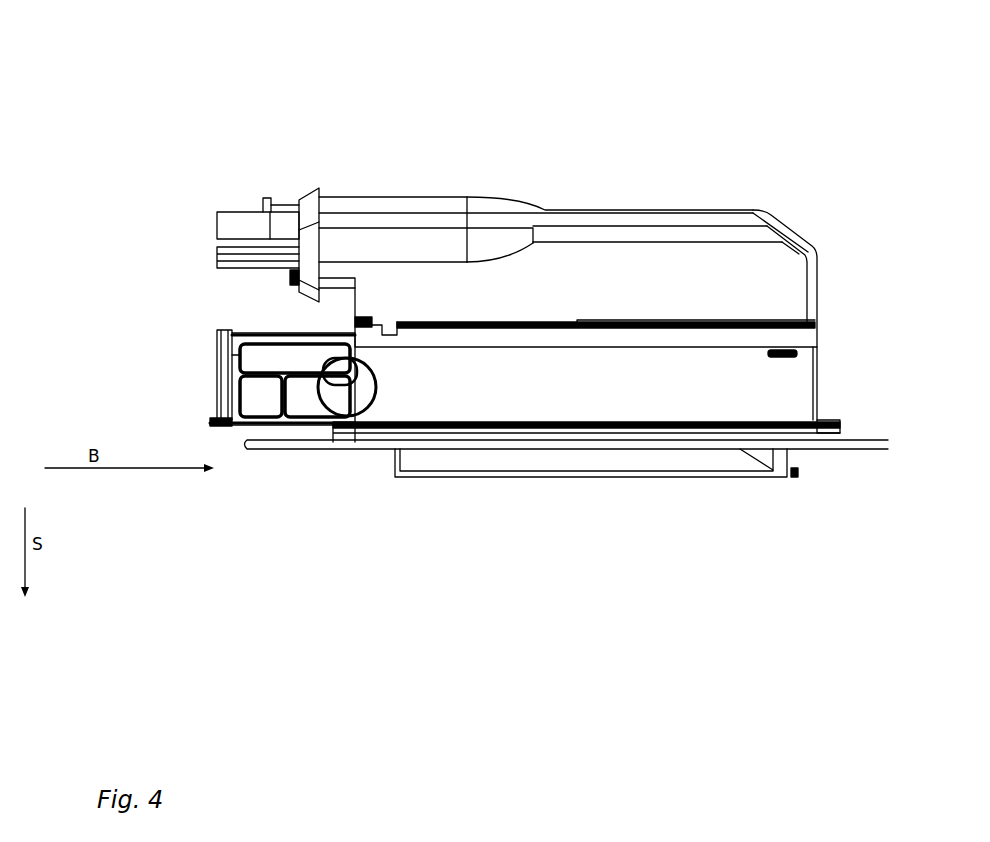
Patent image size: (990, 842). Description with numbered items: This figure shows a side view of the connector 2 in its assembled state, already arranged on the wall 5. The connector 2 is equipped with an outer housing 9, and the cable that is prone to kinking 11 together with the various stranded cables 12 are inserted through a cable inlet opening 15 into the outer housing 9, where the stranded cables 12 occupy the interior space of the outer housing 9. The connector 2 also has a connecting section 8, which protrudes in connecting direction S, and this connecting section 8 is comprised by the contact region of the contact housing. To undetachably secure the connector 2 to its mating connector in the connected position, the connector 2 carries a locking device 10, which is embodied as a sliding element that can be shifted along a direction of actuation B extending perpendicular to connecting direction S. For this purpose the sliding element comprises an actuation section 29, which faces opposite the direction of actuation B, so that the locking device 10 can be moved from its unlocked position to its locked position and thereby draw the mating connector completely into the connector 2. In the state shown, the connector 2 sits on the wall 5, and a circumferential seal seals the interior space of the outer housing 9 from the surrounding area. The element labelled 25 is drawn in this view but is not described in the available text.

The connector 2 is at (804, 87).
The wall 5 is at (888, 440).
The connecting section 8 is at (797, 474).
The outer housing 9 is at (730, 270).
The locking device 10 is at (190, 343).
The cable that is prone to kinking 11 is at (246, 216).
The stranded cables 12 is at (217, 262).
The cable inlet opening 15 is at (284, 275).
The strip 25 is at (834, 424).
The actuation section 29 is at (214, 387).